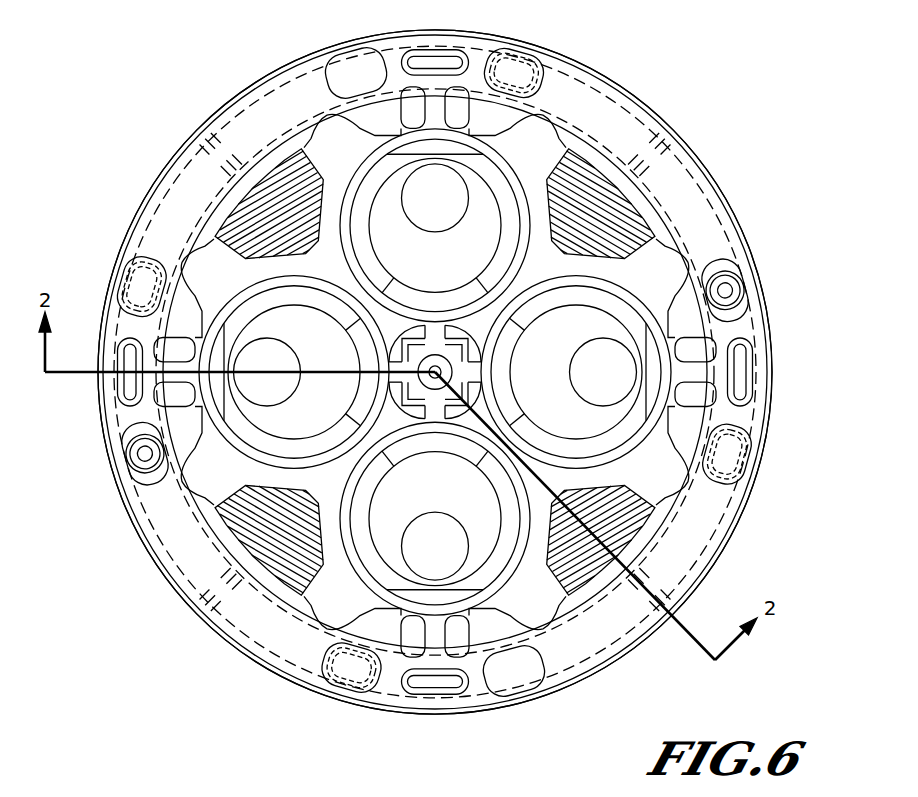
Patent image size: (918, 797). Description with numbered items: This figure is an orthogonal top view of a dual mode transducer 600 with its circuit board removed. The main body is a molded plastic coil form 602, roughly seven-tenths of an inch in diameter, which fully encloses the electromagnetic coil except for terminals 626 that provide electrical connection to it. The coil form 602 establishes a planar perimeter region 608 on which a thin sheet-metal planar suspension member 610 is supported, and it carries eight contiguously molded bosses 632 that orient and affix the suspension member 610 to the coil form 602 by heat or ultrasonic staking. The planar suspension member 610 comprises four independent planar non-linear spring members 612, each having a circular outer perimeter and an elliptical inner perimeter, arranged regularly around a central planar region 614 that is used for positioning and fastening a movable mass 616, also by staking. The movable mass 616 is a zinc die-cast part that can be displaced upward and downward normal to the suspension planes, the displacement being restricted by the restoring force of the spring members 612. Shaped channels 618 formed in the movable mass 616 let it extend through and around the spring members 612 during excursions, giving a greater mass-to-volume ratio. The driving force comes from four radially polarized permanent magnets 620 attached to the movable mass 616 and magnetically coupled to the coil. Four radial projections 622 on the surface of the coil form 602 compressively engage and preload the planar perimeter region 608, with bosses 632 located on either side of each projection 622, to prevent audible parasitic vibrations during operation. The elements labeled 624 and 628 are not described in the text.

The dual mode transducer 600 is at (123, 753).
The coil form 602 is at (377, 628).
The planar perimeter region 608 is at (278, 102).
The planar suspension member 610 is at (293, 620).
The planar non-linear spring member 612 is at (495, 150).
The central planar region 614 is at (448, 343).
The movable mass 616 is at (557, 340).
The shaped channel 618 is at (247, 307).
The radially polarized permanent magnet 620 is at (590, 675).
The radial projection 622 is at (204, 131).
The stator laminations 624 is at (578, 572).
The terminal 626 is at (140, 453).
The mounting holes 628 is at (528, 60).
The boss 632 is at (452, 55).